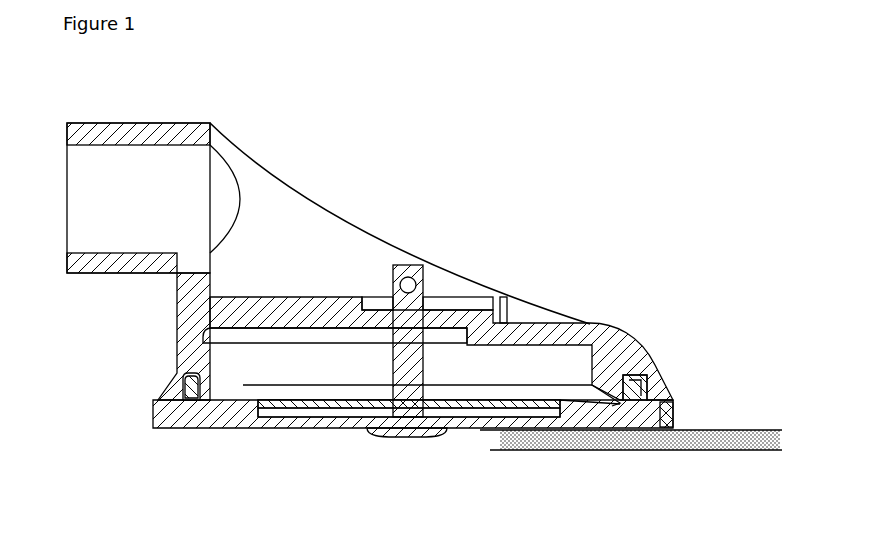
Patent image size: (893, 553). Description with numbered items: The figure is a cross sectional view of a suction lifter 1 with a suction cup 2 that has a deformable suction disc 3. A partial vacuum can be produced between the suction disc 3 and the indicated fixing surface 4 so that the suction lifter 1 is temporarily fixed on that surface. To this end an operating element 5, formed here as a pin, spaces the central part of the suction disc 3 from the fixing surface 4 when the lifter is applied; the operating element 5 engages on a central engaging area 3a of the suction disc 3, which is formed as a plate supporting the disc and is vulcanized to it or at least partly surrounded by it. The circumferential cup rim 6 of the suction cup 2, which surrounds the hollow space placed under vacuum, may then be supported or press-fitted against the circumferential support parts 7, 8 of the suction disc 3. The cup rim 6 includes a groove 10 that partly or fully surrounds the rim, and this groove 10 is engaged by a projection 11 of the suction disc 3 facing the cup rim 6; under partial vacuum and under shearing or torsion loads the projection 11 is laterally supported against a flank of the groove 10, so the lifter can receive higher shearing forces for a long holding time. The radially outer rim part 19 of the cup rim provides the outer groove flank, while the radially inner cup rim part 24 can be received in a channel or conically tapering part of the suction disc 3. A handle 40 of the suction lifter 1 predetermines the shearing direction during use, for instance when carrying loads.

The suction lifter 1 is at (322, 208).
The suction cup 2 is at (591, 335).
The suction disc 3 is at (185, 417).
The central engaging area 3a is at (468, 412).
The fixing surface 4 is at (723, 443).
The operating element 5 is at (410, 313).
The cup rim 6 is at (193, 368).
The support part 7 is at (613, 409).
The support part 8 is at (661, 406).
The groove 10 is at (193, 383).
The projection 11 is at (192, 393).
The rim part 19 is at (655, 393).
The inner cup rim part 24 is at (613, 403).
The handle 40 is at (127, 150).